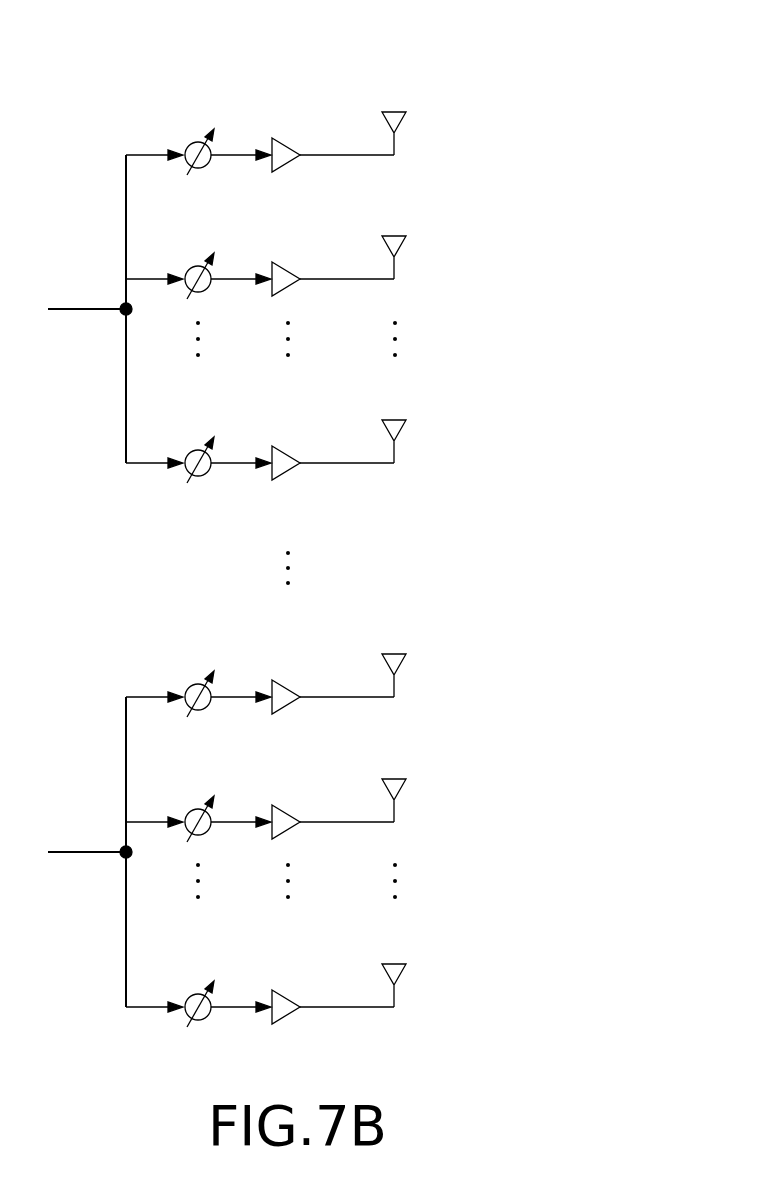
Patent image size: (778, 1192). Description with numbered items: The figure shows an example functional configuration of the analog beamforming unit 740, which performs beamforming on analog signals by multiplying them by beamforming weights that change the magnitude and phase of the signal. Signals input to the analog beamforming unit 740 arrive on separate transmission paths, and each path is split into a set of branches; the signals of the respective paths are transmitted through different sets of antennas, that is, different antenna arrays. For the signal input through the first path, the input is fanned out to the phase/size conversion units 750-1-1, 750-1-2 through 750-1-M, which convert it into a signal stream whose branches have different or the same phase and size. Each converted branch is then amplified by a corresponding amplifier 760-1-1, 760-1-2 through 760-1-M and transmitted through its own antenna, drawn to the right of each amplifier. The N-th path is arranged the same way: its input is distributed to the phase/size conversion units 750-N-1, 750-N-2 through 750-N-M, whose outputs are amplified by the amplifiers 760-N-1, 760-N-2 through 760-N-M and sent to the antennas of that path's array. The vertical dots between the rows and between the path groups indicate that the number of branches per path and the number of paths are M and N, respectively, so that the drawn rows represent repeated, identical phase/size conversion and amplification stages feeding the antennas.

The analog beamforming unit 740 is at (411, 71).
The phase/size conversion unit 750-1-1 is at (192, 141).
The phase/size conversion unit 750-1-2 is at (192, 265).
The phase/size conversion unit 750-1-M is at (192, 449).
The phase/size conversion unit 750-N-1 is at (192, 683).
The phase/size conversion unit 750-N-2 is at (192, 808).
The phase/size conversion unit 750-N-M is at (192, 993).
The amplifier 760-1-1 is at (291, 138).
The amplifier 760-1-2 is at (291, 262).
The amplifier 760-1-M is at (291, 446).
The amplifier 760-N-1 is at (291, 680).
The amplifier 760-N-2 is at (291, 805).
The amplifier 760-N-M is at (291, 990).